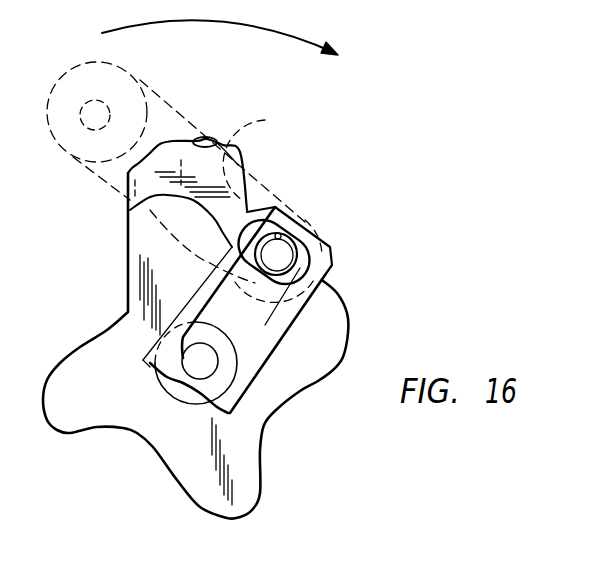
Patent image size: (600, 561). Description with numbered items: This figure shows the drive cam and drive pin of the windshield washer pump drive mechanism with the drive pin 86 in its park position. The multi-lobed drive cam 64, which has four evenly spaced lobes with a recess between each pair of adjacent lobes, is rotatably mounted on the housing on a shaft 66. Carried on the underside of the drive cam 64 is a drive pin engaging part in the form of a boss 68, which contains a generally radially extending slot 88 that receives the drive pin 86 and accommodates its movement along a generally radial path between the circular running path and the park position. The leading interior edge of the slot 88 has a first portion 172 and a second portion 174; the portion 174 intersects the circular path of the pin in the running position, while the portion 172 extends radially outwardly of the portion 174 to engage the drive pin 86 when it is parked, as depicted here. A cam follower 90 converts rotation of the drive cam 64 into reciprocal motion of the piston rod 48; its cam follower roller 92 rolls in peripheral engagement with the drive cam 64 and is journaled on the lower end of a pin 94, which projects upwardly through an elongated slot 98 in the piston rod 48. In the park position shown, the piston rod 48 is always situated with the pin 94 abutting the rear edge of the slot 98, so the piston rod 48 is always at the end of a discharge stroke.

The piston rod 48 is at (318, 243).
The drive cam 64 is at (130, 310).
The shaft 66 is at (193, 361).
The boss 68 is at (127, 197).
The drive pin 86 is at (218, 134).
The slot 88 is at (183, 137).
The cam follower 90 is at (148, 74).
The cam follower roller 92 is at (320, 213).
The pin 94 is at (300, 246).
The elongated slot 98 is at (280, 229).
The first portion of leading interior edge 172 is at (255, 121).
The second portion of leading interior edge 174 is at (245, 180).